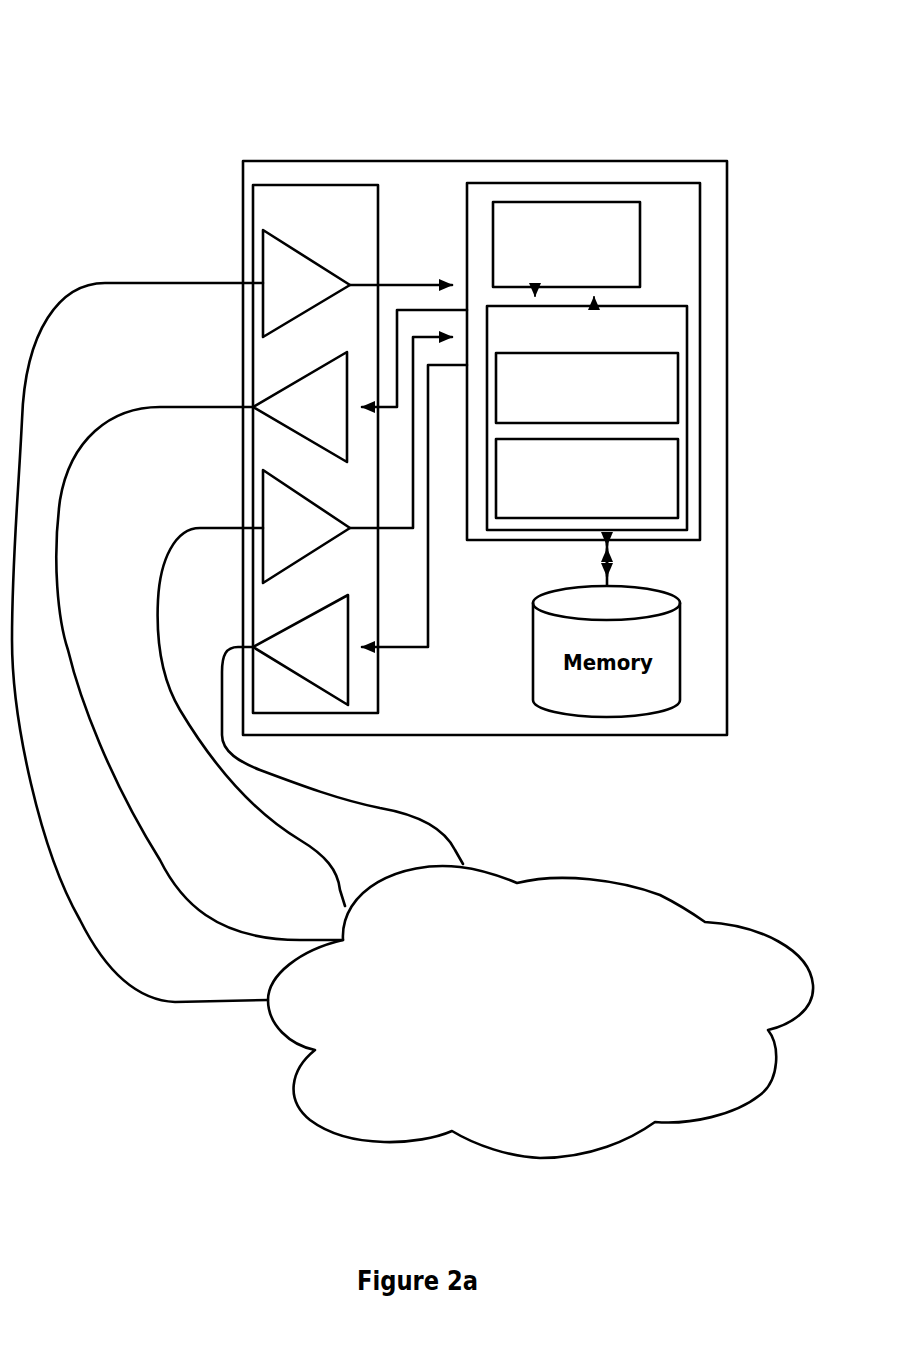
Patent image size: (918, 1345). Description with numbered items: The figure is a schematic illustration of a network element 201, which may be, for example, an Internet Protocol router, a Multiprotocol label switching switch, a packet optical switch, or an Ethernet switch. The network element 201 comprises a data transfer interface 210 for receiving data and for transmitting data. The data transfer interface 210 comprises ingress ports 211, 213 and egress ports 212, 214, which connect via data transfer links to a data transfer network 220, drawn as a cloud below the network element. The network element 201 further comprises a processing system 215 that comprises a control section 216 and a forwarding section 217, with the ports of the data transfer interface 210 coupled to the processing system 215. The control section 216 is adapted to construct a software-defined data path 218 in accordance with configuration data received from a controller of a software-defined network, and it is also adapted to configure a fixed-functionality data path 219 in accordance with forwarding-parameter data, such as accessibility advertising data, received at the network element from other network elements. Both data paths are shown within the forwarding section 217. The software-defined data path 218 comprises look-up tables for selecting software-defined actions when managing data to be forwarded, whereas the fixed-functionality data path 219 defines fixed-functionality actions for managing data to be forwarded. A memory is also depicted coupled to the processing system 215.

The network element 201 is at (647, 160).
The data transfer interface 210 is at (380, 700).
The ingress port 211 is at (315, 297).
The egress port 212 is at (332, 417).
The ingress port 213 is at (317, 540).
The egress port 214 is at (333, 659).
The processing system 215 is at (690, 217).
The control section 216 is at (587, 272).
The forwarding section 217 is at (676, 341).
The software-defined data path 218 is at (665, 412).
The fixed-functionality data path 219 is at (665, 506).
The data transfer network 220 is at (548, 1012).